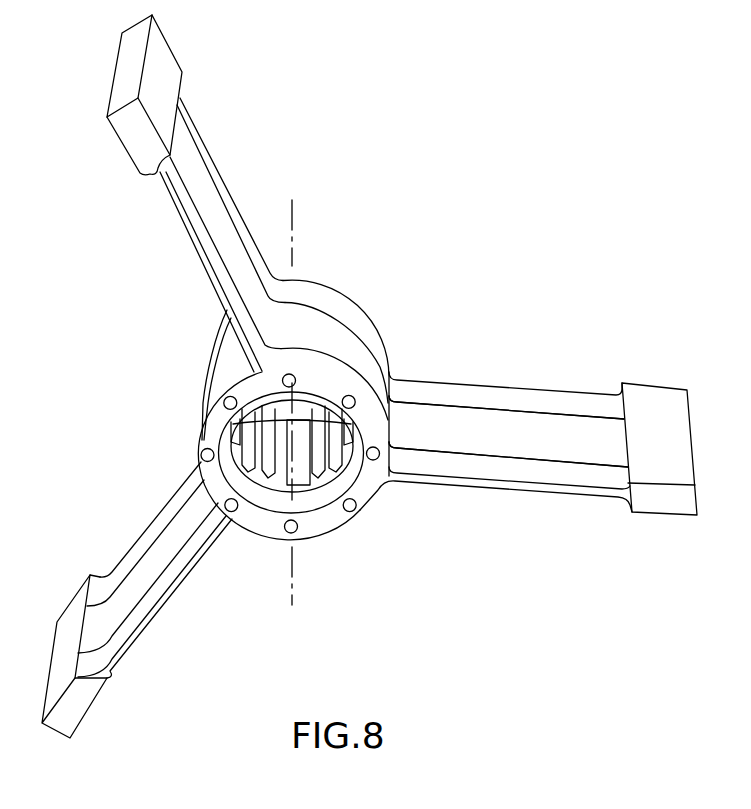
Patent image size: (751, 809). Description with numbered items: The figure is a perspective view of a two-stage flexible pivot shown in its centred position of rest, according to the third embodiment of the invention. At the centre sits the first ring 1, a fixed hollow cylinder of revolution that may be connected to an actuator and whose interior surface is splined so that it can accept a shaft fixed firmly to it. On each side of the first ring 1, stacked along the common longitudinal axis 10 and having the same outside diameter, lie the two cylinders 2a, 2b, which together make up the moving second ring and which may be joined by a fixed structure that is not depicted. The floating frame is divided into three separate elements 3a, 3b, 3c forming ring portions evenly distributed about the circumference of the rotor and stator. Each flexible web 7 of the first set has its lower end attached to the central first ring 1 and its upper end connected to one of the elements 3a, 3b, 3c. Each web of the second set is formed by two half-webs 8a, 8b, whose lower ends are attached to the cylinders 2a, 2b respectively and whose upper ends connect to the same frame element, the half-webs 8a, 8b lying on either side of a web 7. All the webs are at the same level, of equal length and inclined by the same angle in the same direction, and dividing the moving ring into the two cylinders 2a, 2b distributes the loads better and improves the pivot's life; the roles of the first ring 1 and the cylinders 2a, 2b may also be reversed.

The first ring 1 is at (332, 333).
The cylinder 2a is at (496, 409).
The cylinder 2b is at (287, 290).
The element of the floating frame 3a is at (647, 407).
The element of the floating frame 3b is at (145, 135).
The element of the floating frame 3c is at (73, 710).
The flexible web 7 is at (493, 438).
The half-web 8a is at (512, 473).
The half-web 8b is at (478, 398).
The longitudinal axis 10 is at (292, 560).